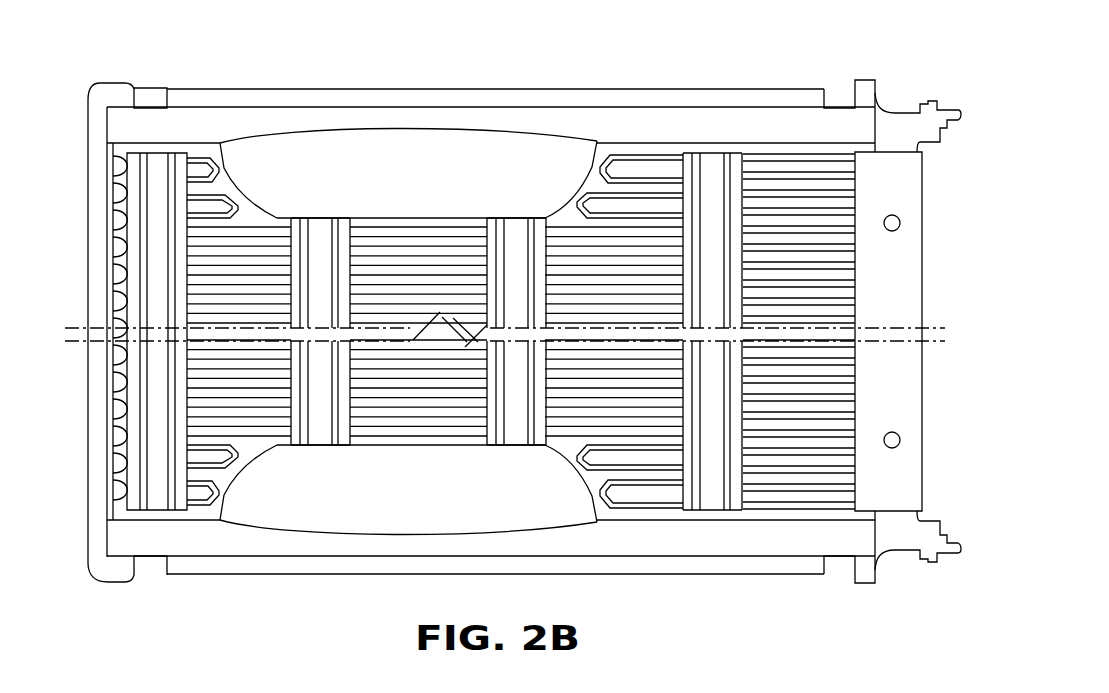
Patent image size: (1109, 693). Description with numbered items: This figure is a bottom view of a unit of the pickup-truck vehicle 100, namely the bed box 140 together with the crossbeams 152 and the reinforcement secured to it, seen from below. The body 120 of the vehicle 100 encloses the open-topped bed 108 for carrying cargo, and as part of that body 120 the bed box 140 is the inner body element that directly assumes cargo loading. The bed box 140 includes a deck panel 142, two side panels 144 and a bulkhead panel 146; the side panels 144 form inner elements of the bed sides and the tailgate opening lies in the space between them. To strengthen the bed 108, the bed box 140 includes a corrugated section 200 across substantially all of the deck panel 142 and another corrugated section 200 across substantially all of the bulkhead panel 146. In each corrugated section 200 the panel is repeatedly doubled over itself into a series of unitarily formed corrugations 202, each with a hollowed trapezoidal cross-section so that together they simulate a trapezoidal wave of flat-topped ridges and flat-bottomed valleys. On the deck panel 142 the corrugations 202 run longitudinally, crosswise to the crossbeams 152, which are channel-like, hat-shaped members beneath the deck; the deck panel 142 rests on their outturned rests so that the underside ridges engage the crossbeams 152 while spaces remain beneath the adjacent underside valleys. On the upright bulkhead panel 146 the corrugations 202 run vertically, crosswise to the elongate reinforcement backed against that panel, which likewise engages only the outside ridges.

The vehicle 100 is at (110, 88).
The bed 108 is at (197, 88).
The body 120 is at (272, 88).
The bed box 140 is at (353, 88).
The deck panel 142 is at (621, 140).
The side panels 144 is at (418, 88).
The bulkhead panel 146 is at (88, 385).
The crossbeams 152 is at (157, 511).
The corrugated section 200 is at (643, 155).
The corrugations 202 is at (666, 163).